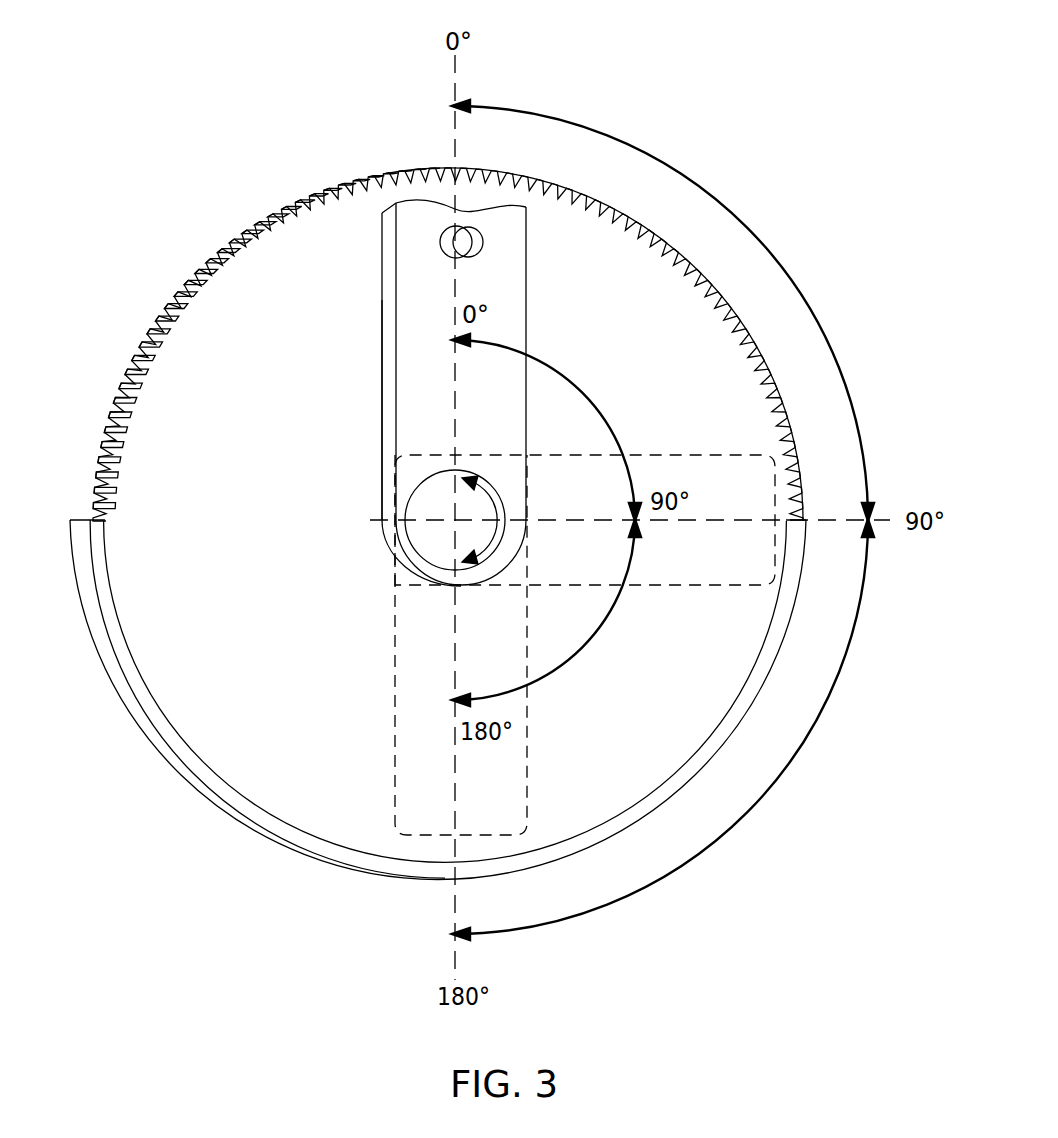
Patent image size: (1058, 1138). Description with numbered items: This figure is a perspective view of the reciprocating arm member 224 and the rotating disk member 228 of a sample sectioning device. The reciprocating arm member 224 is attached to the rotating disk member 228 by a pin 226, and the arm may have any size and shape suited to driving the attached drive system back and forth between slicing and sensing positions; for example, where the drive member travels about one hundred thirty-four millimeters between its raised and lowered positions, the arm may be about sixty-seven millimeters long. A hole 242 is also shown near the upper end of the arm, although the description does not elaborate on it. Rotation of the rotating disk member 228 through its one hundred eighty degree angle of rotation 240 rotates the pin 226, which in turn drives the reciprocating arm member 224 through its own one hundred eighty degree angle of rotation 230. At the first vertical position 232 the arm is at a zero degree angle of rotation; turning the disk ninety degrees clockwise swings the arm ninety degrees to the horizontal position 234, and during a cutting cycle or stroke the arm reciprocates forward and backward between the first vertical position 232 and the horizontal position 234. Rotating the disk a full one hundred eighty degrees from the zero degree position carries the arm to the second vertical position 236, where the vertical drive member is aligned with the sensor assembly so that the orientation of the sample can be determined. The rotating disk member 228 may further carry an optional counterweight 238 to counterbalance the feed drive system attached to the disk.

The reciprocating arm member 224 is at (418, 321).
The pin 226 is at (442, 505).
The rotating disk member 228 is at (655, 318).
The 180 degree angle of rotation 230 is at (598, 642).
The first vertical position 232 is at (372, 427).
The horizontal position 234 is at (692, 450).
The second vertical position 236 is at (536, 768).
The counterweight 238 is at (745, 723).
The 180 degree angle of rotation 240 is at (704, 186).
The hole 242 is at (483, 241).